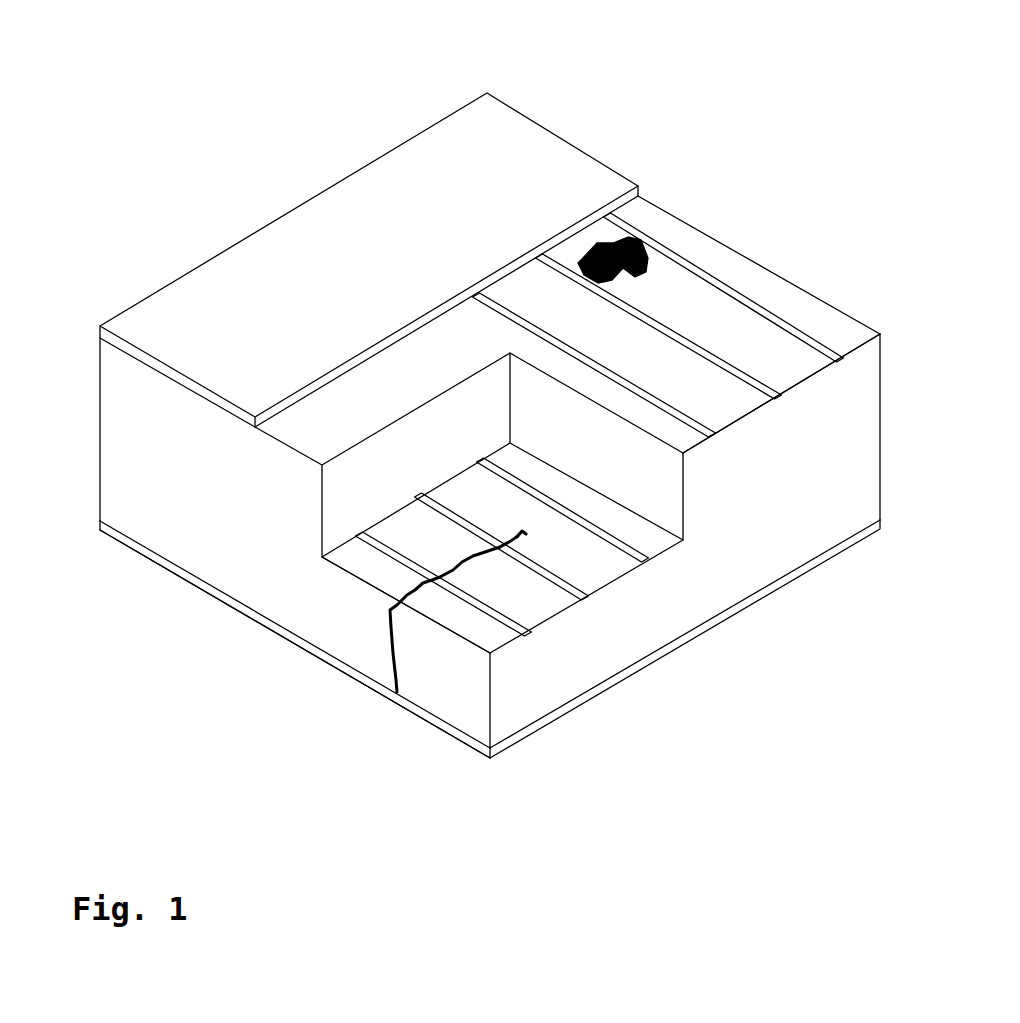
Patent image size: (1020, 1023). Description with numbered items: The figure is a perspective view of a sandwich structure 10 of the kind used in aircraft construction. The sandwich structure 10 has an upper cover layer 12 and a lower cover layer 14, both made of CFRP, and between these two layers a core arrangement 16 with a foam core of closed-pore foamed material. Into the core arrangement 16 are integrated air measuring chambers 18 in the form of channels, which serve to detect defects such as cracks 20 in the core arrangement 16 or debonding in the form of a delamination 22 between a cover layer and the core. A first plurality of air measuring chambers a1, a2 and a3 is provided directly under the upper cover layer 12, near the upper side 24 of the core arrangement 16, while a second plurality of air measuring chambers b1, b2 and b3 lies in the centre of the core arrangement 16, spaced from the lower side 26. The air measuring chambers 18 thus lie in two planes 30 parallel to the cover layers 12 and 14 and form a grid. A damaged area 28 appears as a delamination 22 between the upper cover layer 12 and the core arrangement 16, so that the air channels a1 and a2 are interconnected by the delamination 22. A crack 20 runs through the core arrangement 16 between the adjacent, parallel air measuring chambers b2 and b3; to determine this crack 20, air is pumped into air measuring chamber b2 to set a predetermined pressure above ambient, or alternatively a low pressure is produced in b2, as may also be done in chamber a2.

The sandwich structure 10 is at (203, 256).
The upper cover layer 12 is at (561, 135).
The lower cover layer 14 is at (183, 568).
The core arrangement 16 is at (115, 466).
The air measuring chambers 18 is at (472, 512).
The crack 20 is at (423, 585).
The delamination 22 is at (403, 547).
The upper side of the core arrangement 24 is at (378, 162).
The lower side of the core arrangement 26 is at (250, 622).
The damaged area 28 is at (631, 246).
The planes 30 is at (812, 288).
The air measuring chamber a1 is at (840, 362).
The air measuring chamber a2 is at (779, 399).
The air measuring chamber a3 is at (713, 437).
The air measuring chamber b1 is at (646, 560).
The air measuring chamber b2 is at (586, 599).
The air measuring chamber b3 is at (528, 634).